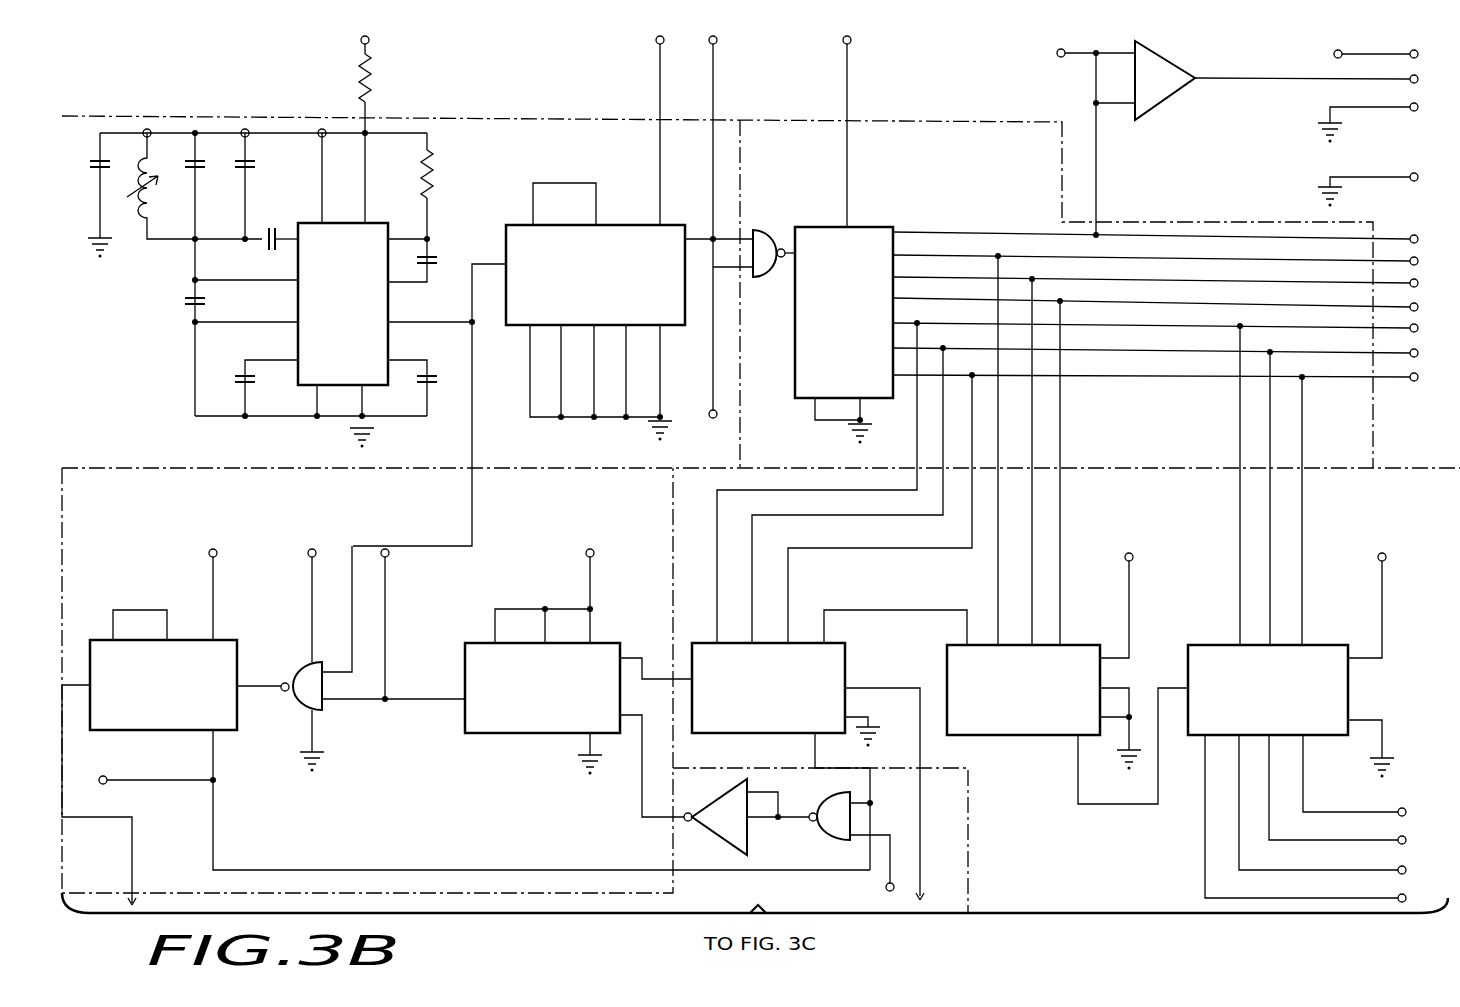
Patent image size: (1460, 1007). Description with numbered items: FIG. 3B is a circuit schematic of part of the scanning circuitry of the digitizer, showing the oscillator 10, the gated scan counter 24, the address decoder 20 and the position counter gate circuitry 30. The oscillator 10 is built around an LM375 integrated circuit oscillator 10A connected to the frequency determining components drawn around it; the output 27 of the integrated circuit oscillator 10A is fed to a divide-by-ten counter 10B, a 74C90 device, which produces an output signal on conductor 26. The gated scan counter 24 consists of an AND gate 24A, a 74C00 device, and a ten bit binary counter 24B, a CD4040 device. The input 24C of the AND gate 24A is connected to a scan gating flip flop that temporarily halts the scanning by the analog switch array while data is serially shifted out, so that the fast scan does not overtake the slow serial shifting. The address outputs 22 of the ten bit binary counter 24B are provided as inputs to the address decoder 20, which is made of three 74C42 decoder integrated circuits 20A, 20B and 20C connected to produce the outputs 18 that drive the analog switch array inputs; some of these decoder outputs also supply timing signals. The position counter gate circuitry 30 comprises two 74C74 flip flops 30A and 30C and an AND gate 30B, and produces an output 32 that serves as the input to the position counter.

The oscillator 10 is at (523, 157).
The integrated circuit oscillator 10A is at (389, 302).
The divide-by-ten counter 10B is at (626, 225).
The conductor 26 is at (697, 239).
The output of integrated circuit oscillator 27 is at (472, 386).
The gated scan counter 24 is at (1005, 162).
The AND gate 24A is at (772, 230).
The ten bit binary counter 24B is at (877, 227).
The input of AND gate 24C is at (1168, 96).
The address outputs 22 is at (1021, 216).
The position counter gate circuitry 30 is at (478, 696).
The flip flop 30A is at (225, 640).
The AND gate 30B is at (299, 710).
The flip flop 30C is at (596, 643).
The output of position counter gate circuitry 32 is at (92, 766).
The address decoder 20 is at (1190, 513).
The decoder integrated circuit 20A is at (832, 643).
The decoder integrated circuit 20B is at (1086, 645).
The decoder integrated circuit 20C is at (1328, 645).
The outputs 18 is at (1193, 851).